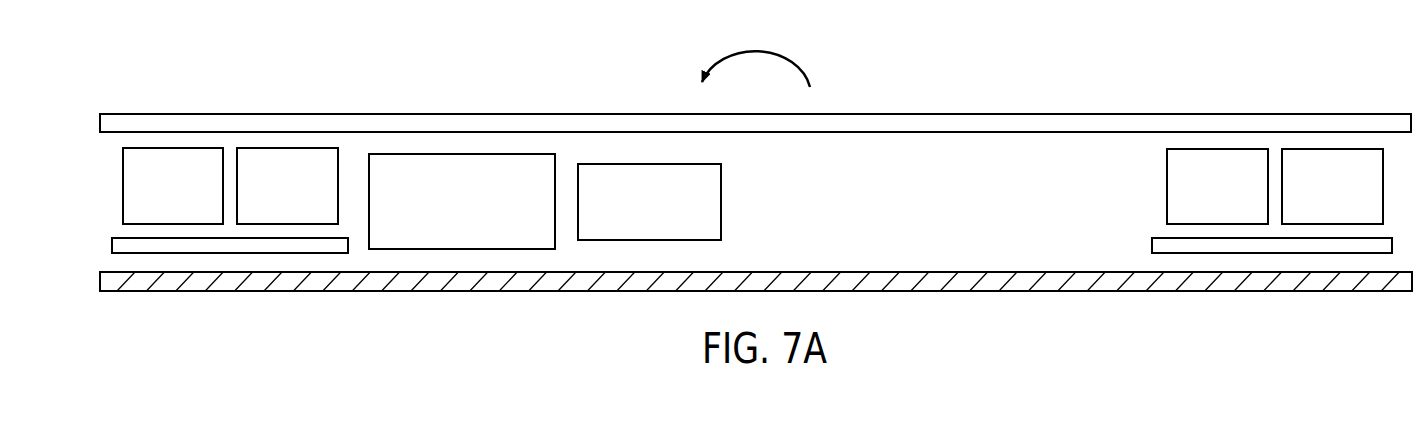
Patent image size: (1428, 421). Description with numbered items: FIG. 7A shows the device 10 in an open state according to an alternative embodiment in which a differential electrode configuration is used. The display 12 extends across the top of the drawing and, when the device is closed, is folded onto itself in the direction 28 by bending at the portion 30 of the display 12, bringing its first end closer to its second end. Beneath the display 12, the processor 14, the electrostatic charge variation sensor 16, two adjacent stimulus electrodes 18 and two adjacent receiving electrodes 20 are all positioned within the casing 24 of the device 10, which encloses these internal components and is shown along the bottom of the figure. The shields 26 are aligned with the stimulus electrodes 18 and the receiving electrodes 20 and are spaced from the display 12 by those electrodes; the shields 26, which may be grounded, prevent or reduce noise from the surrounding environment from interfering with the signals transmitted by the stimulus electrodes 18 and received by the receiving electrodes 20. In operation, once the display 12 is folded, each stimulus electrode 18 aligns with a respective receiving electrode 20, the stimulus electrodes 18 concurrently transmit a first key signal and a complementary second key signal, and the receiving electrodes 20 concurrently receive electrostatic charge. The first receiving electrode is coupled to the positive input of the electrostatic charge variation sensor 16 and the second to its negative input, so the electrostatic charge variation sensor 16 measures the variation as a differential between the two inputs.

The device 10 is at (190, 43).
The display 12 is at (1366, 121).
The processor 14 is at (652, 164).
The electrostatic charge variation sensor 16 is at (472, 154).
The stimulus electrode 18 is at (1222, 149).
The receiving electrode 20 is at (172, 148).
The casing 24 is at (1367, 282).
The shield 26 is at (228, 253).
The direction 28 is at (752, 46).
The portion 30 is at (770, 105).